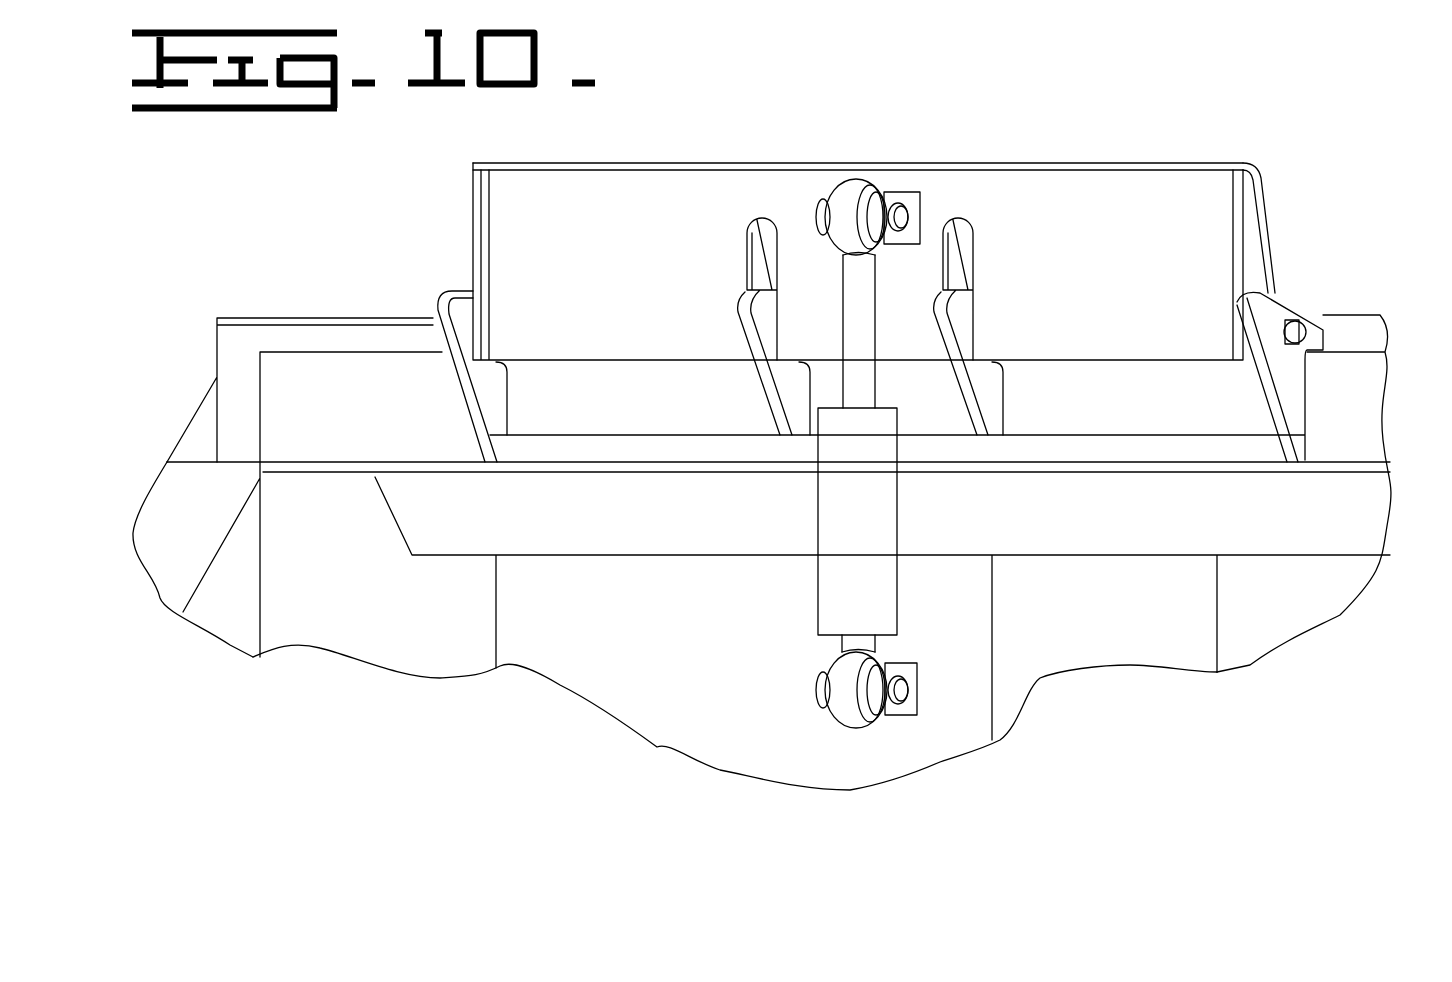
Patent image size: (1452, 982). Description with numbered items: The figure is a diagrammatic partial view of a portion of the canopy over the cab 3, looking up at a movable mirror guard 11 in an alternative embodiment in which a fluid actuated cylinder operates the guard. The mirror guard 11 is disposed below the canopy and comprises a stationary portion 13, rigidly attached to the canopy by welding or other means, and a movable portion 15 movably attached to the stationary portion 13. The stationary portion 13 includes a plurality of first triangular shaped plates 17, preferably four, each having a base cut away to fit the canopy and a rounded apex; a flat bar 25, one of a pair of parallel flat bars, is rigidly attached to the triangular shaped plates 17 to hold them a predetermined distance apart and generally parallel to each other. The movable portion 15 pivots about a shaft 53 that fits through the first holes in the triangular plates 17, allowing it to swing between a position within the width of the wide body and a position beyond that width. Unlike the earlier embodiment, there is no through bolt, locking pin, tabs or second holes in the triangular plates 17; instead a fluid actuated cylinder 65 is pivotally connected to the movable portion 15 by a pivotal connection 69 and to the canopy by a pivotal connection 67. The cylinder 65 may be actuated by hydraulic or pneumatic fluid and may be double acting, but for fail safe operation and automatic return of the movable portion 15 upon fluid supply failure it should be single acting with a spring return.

The cab 3 is at (1370, 388).
The mirror guard 11 is at (1005, 192).
The stationary portion 13 is at (455, 383).
The movable portion 15 is at (766, 163).
The first triangular shaped plates 17 is at (495, 373).
The flat bar 25 is at (680, 450).
The shaft 53 is at (1305, 330).
The fluid actuated cylinder 65 is at (880, 505).
The pivotal connection 67 is at (852, 720).
The pivotal connection 69 is at (853, 192).